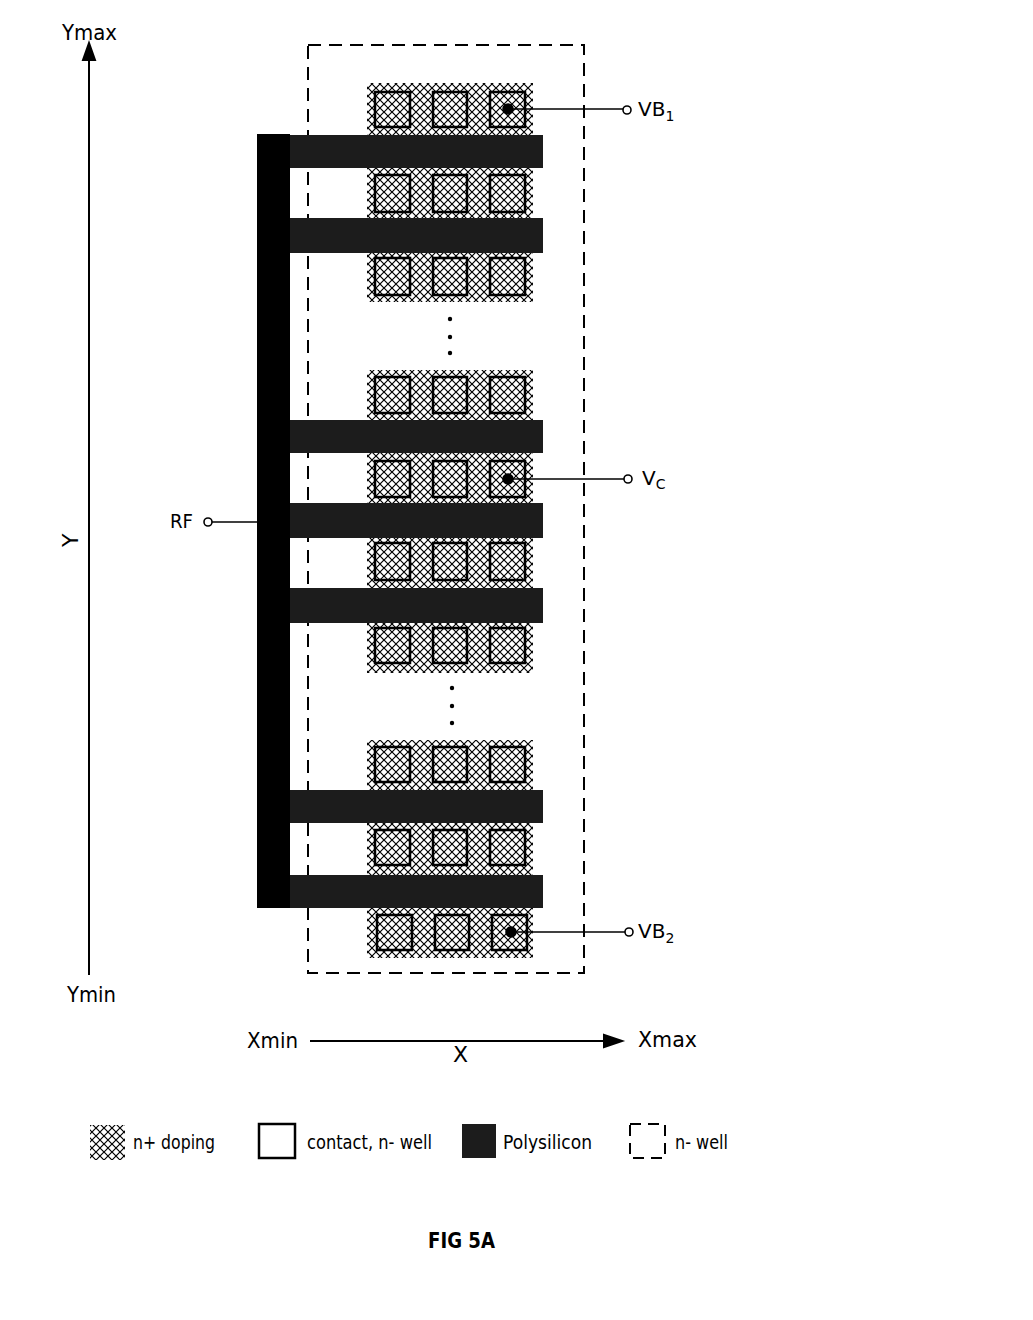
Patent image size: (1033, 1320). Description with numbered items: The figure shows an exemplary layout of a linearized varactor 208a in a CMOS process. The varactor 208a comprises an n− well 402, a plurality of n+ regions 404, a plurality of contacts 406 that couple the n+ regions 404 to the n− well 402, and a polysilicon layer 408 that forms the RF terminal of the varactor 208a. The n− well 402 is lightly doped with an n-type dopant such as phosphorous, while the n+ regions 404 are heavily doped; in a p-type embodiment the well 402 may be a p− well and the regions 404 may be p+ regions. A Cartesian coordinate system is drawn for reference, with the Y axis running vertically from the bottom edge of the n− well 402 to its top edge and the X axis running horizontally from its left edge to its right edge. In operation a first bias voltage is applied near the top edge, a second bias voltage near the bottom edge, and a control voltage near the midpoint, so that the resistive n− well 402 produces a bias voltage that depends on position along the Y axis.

The n− well 402 is at (583, 348).
The n+ regions 404 is at (368, 92).
The contacts 406 is at (451, 91).
The polysilicon layer 408 is at (334, 507).
The varactor 208a is at (208, 223).